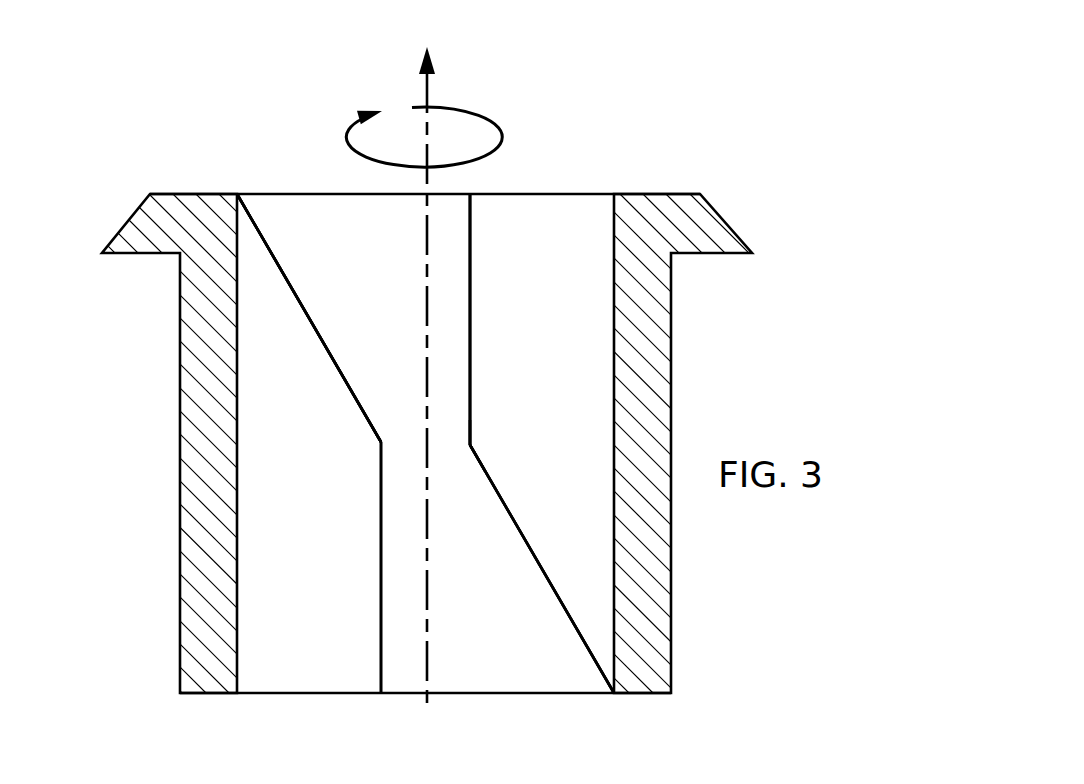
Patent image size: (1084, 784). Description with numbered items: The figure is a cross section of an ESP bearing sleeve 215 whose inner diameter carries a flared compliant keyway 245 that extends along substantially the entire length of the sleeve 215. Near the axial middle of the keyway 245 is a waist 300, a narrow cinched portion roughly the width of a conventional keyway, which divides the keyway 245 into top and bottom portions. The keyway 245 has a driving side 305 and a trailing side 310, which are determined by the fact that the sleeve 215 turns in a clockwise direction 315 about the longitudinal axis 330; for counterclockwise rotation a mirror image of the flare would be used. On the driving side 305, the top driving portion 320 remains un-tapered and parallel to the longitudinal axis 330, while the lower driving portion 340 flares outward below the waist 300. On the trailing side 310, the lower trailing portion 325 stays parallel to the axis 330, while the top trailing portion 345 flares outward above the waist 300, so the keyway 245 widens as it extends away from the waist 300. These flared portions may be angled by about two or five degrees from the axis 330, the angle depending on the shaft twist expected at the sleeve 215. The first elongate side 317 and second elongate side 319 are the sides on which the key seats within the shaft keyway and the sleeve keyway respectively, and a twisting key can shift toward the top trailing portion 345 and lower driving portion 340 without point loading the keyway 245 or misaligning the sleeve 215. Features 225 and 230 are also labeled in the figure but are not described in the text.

The sleeve 215 is at (542, 389).
The socket body wall 225 is at (667, 413).
The flange / top surface 230 is at (665, 194).
The keyway 245 is at (390, 290).
The waist 300 is at (472, 446).
The driving side 305 is at (491, 366).
The trailing side 310 is at (349, 406).
The clockwise direction 315 is at (487, 114).
The first elongate side 317 is at (306, 247).
The second elongate side 319 is at (500, 505).
The top driving portion 320 is at (472, 250).
The lower trailing portion 325 is at (367, 582).
The longitudinal axis 330 is at (433, 60).
The lower driving portion 340 is at (565, 540).
The top trailing portion 345 is at (304, 315).